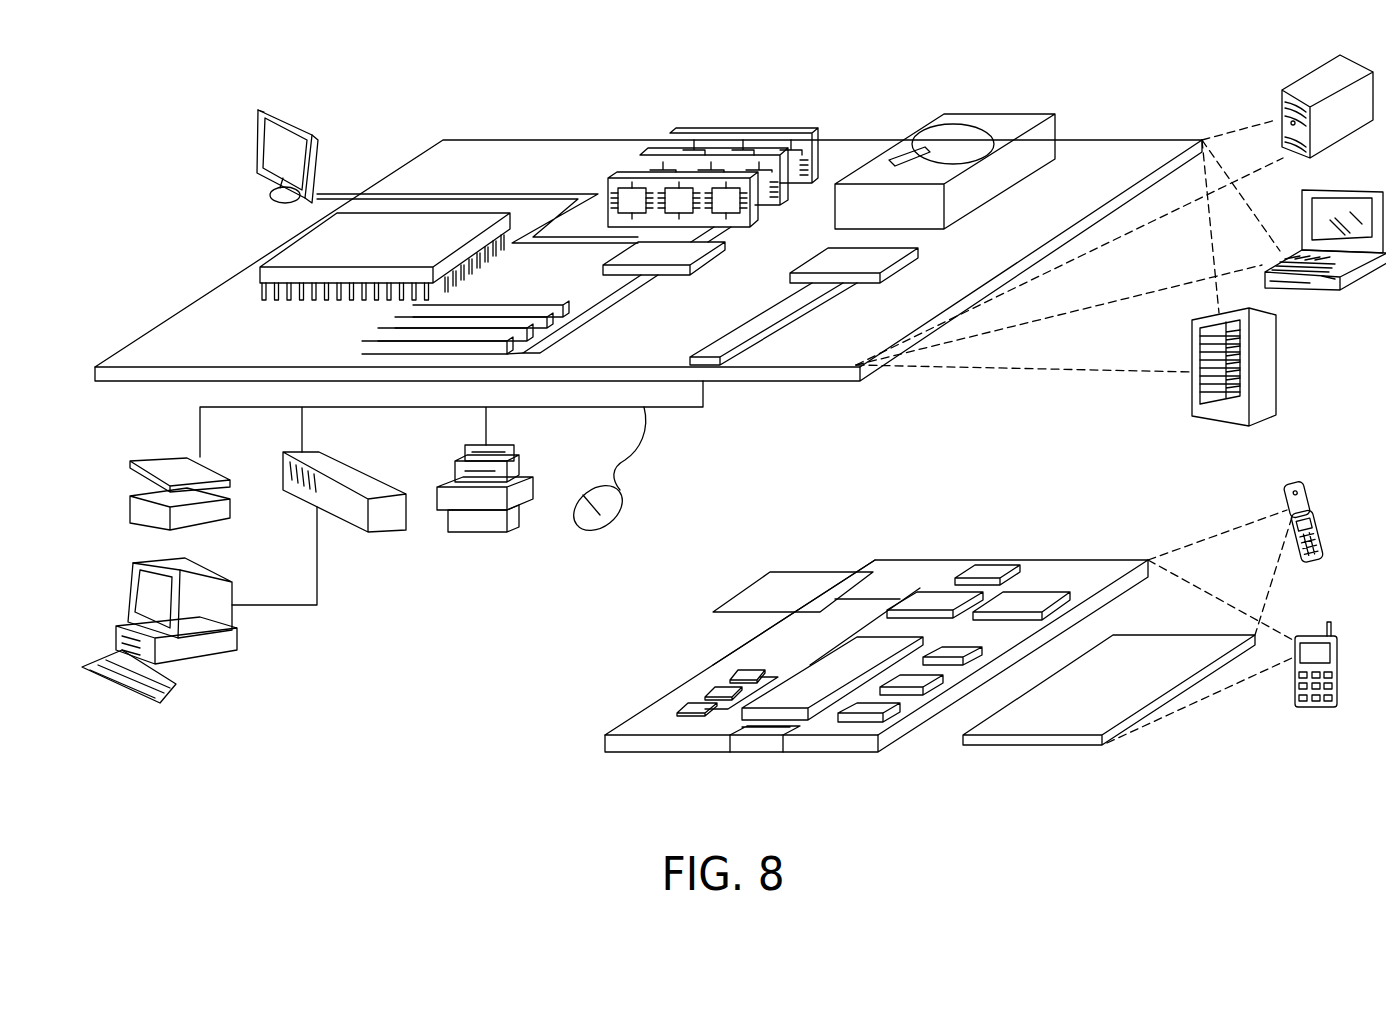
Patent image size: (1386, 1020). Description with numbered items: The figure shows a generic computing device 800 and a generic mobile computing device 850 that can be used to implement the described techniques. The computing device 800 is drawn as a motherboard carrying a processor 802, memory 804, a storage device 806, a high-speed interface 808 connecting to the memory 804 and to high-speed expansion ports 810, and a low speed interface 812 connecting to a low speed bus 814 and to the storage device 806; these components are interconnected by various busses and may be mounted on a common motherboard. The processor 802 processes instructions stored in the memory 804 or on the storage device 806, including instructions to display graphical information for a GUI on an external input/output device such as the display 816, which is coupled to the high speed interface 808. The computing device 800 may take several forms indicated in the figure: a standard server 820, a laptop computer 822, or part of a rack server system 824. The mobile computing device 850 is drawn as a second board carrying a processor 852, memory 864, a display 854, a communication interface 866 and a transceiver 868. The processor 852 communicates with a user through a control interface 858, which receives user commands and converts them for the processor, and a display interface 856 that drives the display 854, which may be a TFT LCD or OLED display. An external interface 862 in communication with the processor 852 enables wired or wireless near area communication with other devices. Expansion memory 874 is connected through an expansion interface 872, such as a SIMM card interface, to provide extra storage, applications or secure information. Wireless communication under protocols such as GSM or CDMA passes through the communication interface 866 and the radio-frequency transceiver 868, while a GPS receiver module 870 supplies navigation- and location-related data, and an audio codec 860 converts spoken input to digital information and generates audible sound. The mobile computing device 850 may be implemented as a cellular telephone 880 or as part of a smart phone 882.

The computing device 800 is at (392, 86).
The processor 802 is at (287, 248).
The memory 804 is at (748, 133).
The storage device 806 is at (985, 117).
The high-speed interface 808 is at (680, 250).
The high-speed expansion ports 810 is at (392, 330).
The low speed interface 812 is at (824, 262).
The low speed bus 814 is at (708, 348).
The display 816 is at (260, 108).
The standard server 820 is at (1302, 86).
The laptop computer 822 is at (1357, 190).
The rack server system 824 is at (1278, 364).
The mobile computing device 850 is at (563, 757).
The processor 852 is at (797, 685).
The display 854 is at (1149, 652).
The display interface 856 is at (880, 708).
The control interface 858 is at (918, 682).
The audio codec 860 is at (958, 652).
The external interface 862 is at (757, 745).
The memory 864 is at (712, 690).
The communication interface 866 is at (935, 594).
The transceiver 868 is at (1030, 596).
The GPS receiver module 870 is at (991, 570).
The expansion interface 872 is at (857, 572).
The expansion memory 874 is at (771, 572).
The cellular telephone 880 is at (1298, 482).
The smart phone 882 is at (1309, 636).